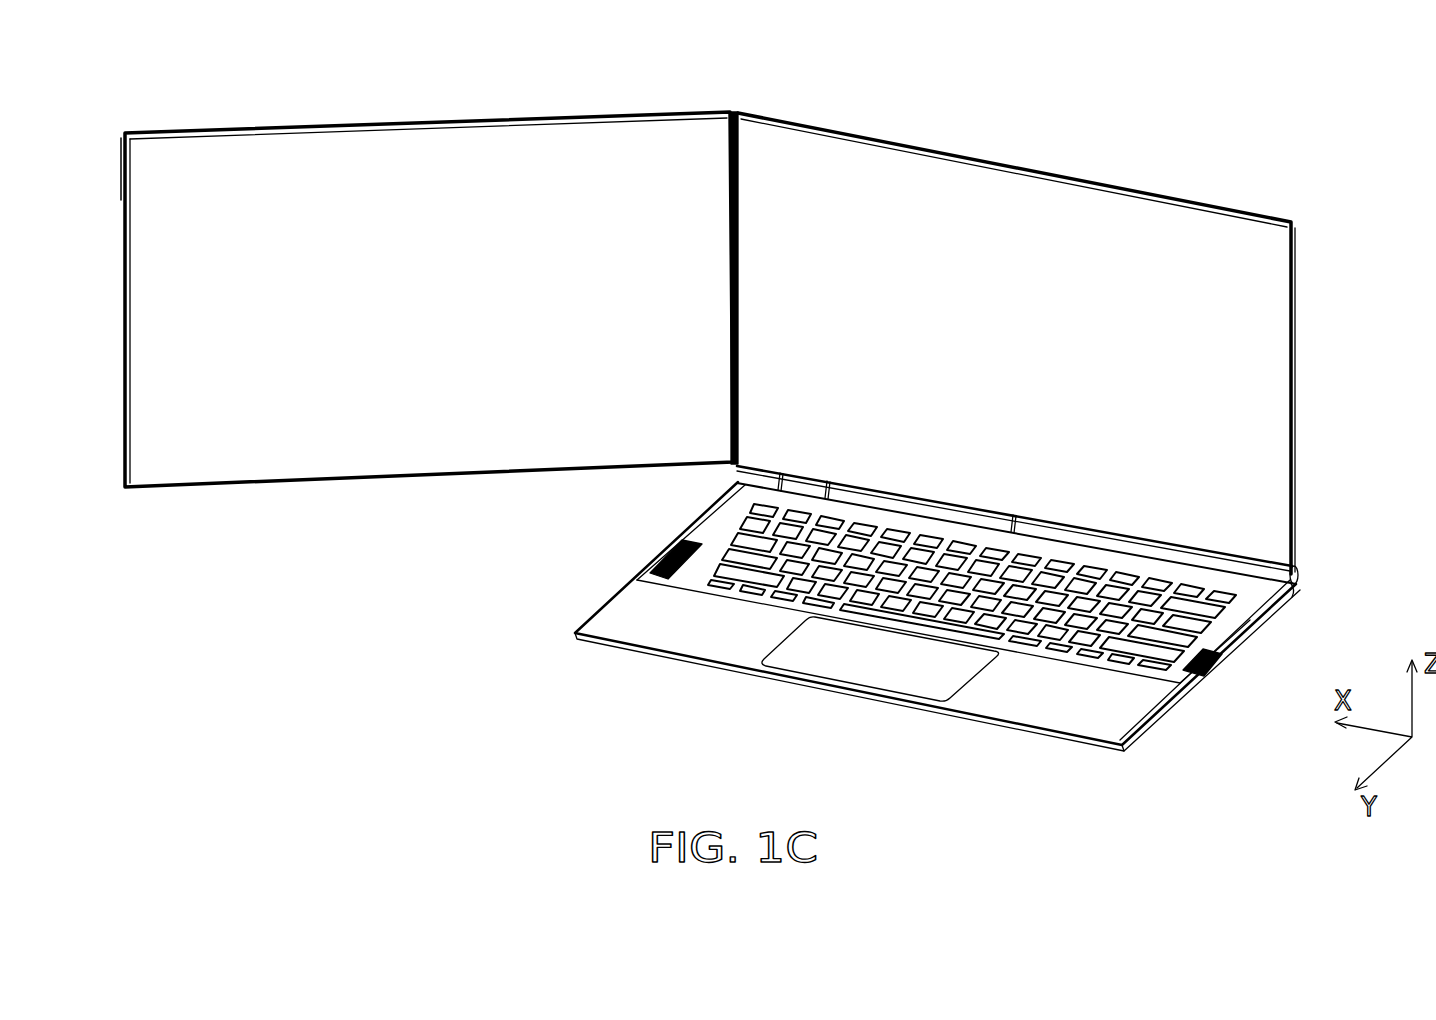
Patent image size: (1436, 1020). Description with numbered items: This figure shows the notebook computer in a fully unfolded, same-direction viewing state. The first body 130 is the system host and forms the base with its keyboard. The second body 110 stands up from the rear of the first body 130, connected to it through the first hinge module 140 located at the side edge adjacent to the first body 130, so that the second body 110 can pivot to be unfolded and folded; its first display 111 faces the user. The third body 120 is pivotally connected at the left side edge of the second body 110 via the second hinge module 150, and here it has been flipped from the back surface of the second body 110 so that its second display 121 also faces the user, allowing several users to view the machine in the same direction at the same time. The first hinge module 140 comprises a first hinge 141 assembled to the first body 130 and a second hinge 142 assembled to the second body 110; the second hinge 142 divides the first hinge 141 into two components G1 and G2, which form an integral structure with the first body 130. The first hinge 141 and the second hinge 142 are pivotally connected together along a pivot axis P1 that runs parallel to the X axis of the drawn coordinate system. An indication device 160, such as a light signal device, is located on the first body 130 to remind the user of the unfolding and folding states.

The second body 110 is at (1295, 364).
The first display 111 is at (1222, 418).
The third body 120 is at (505, 117).
The second display 121 is at (165, 418).
The first body 130 is at (1160, 718).
The first hinge module 140 is at (1017, 449).
The first hinge 141 is at (222, 543).
The second hinge 142 is at (830, 490).
The second hinge module 150 is at (742, 151).
The indication device 160 is at (1298, 592).
The component G1 is at (785, 484).
The component G2 is at (1012, 522).
The pivot axis P1 is at (1300, 581).